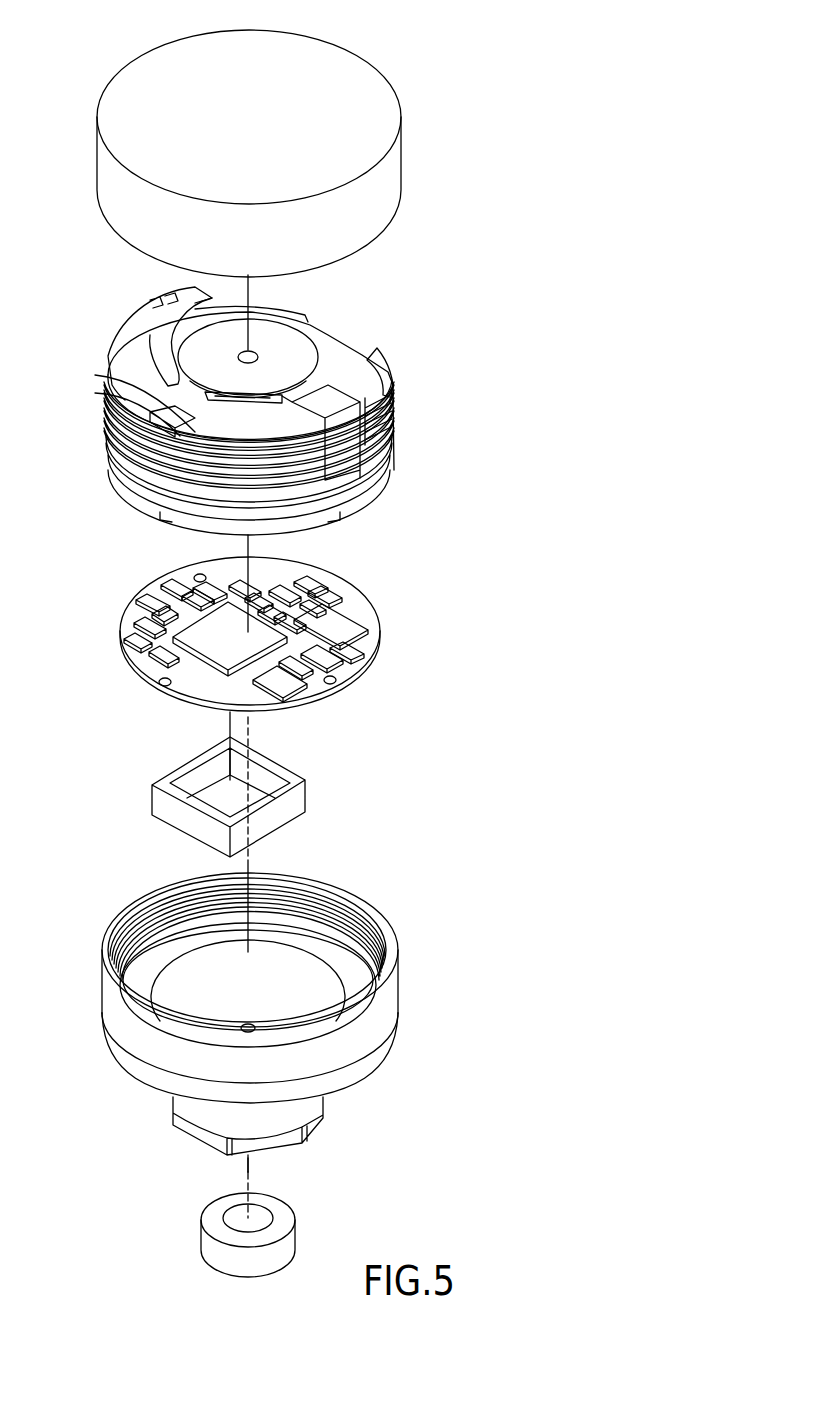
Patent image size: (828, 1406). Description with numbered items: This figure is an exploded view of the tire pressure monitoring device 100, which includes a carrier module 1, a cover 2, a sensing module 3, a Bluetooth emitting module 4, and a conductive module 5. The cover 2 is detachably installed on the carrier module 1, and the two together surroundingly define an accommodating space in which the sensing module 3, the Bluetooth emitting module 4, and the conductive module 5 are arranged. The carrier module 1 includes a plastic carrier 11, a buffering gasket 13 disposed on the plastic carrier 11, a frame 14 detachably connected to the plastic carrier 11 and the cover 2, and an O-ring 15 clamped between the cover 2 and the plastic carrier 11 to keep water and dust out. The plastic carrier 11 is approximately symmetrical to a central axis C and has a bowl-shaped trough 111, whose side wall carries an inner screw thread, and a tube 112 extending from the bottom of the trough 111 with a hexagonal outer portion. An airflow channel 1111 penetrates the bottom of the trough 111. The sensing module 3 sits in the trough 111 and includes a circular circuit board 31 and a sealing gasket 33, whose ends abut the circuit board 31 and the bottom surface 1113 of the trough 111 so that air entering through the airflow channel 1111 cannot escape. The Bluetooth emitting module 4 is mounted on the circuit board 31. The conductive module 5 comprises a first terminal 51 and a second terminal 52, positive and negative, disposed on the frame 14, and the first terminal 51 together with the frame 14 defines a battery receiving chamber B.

The tire pressure monitoring device 100 is at (28, 31).
The cover 2 is at (392, 84).
The carrier module 1 is at (476, 346).
The frame 14 is at (394, 363).
The O-ring 15 is at (397, 436).
The conductive module 5 is at (54, 362).
The first terminal 51 is at (153, 384).
The second terminal 52 is at (127, 418).
The battery receiving chamber B is at (325, 357).
The sensing module 3 is at (402, 717).
The circuit board 31 is at (312, 704).
The sealing gasket 33 is at (295, 807).
The Bluetooth emitting module 4 is at (195, 628).
The plastic carrier 11 is at (350, 1083).
The trough 111 is at (138, 1043).
The tube 112 is at (195, 1133).
The airflow channel 1111 is at (256, 1015).
The bottom surface 1113 is at (193, 997).
The buffering gasket 13 is at (298, 1232).
The central axis C is at (248, 1170).